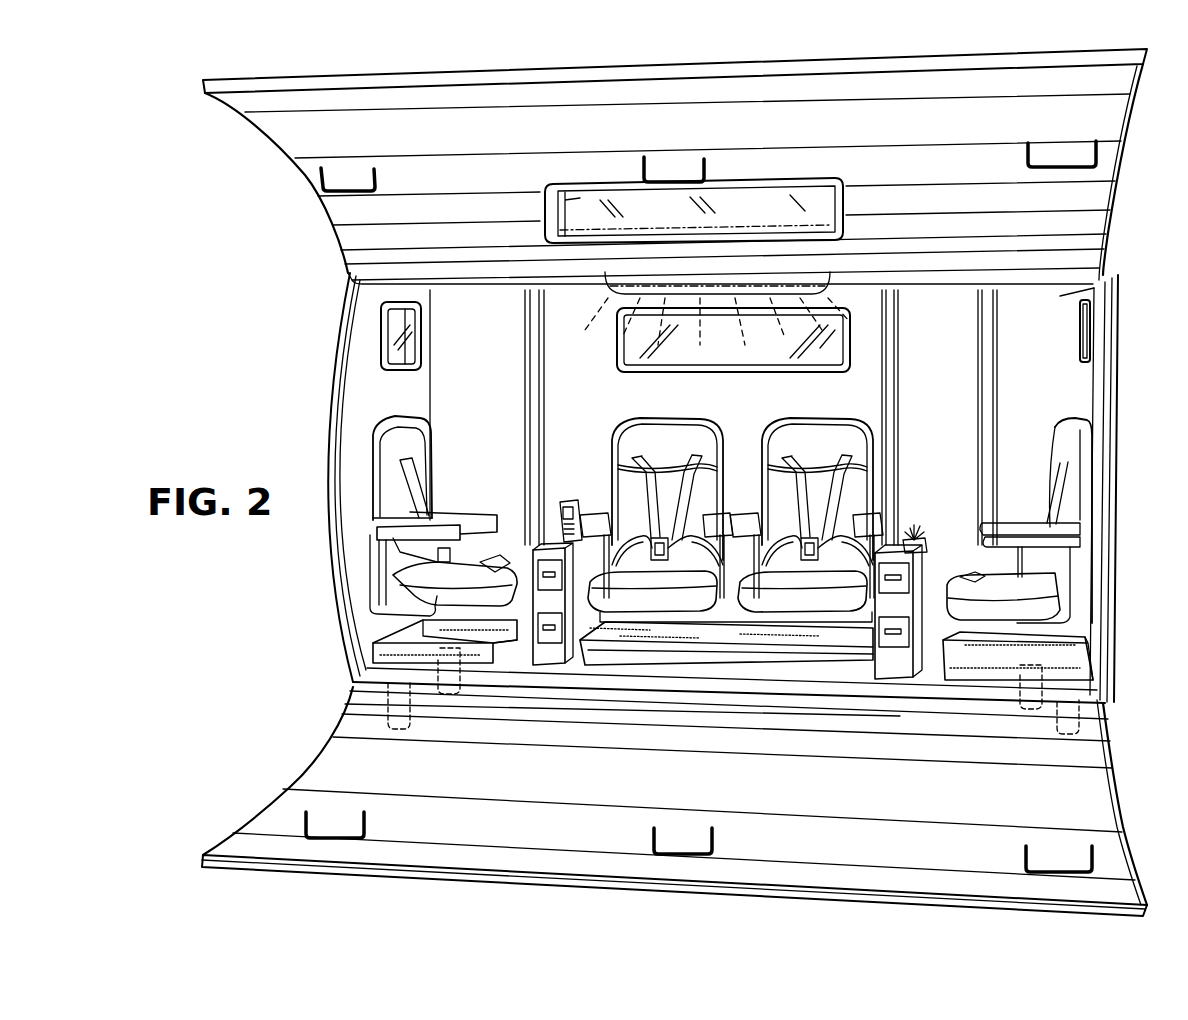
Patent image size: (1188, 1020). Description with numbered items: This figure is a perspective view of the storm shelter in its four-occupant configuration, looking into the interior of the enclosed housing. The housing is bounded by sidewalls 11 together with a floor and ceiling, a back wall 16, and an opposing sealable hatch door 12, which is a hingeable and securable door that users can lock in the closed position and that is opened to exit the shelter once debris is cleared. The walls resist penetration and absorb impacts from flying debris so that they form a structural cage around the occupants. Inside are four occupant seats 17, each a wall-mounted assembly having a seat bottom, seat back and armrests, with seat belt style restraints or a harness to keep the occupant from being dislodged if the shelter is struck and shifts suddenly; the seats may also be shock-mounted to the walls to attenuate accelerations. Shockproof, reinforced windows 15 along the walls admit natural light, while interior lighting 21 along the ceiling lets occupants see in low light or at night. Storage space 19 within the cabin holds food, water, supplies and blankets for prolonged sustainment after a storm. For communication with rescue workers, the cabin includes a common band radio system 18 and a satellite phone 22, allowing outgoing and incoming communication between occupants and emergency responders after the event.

The sidewalls 11 is at (360, 386).
The sealable hatch door 12 is at (838, 868).
The windows 15 is at (413, 340).
The back wall 16 is at (1073, 290).
The occupant seat 17 is at (433, 468).
The common band (CB) radio system 18 is at (908, 530).
The storage space 19 is at (420, 655).
The interior lighting 21 is at (612, 295).
The satellite phone 22 is at (567, 500).